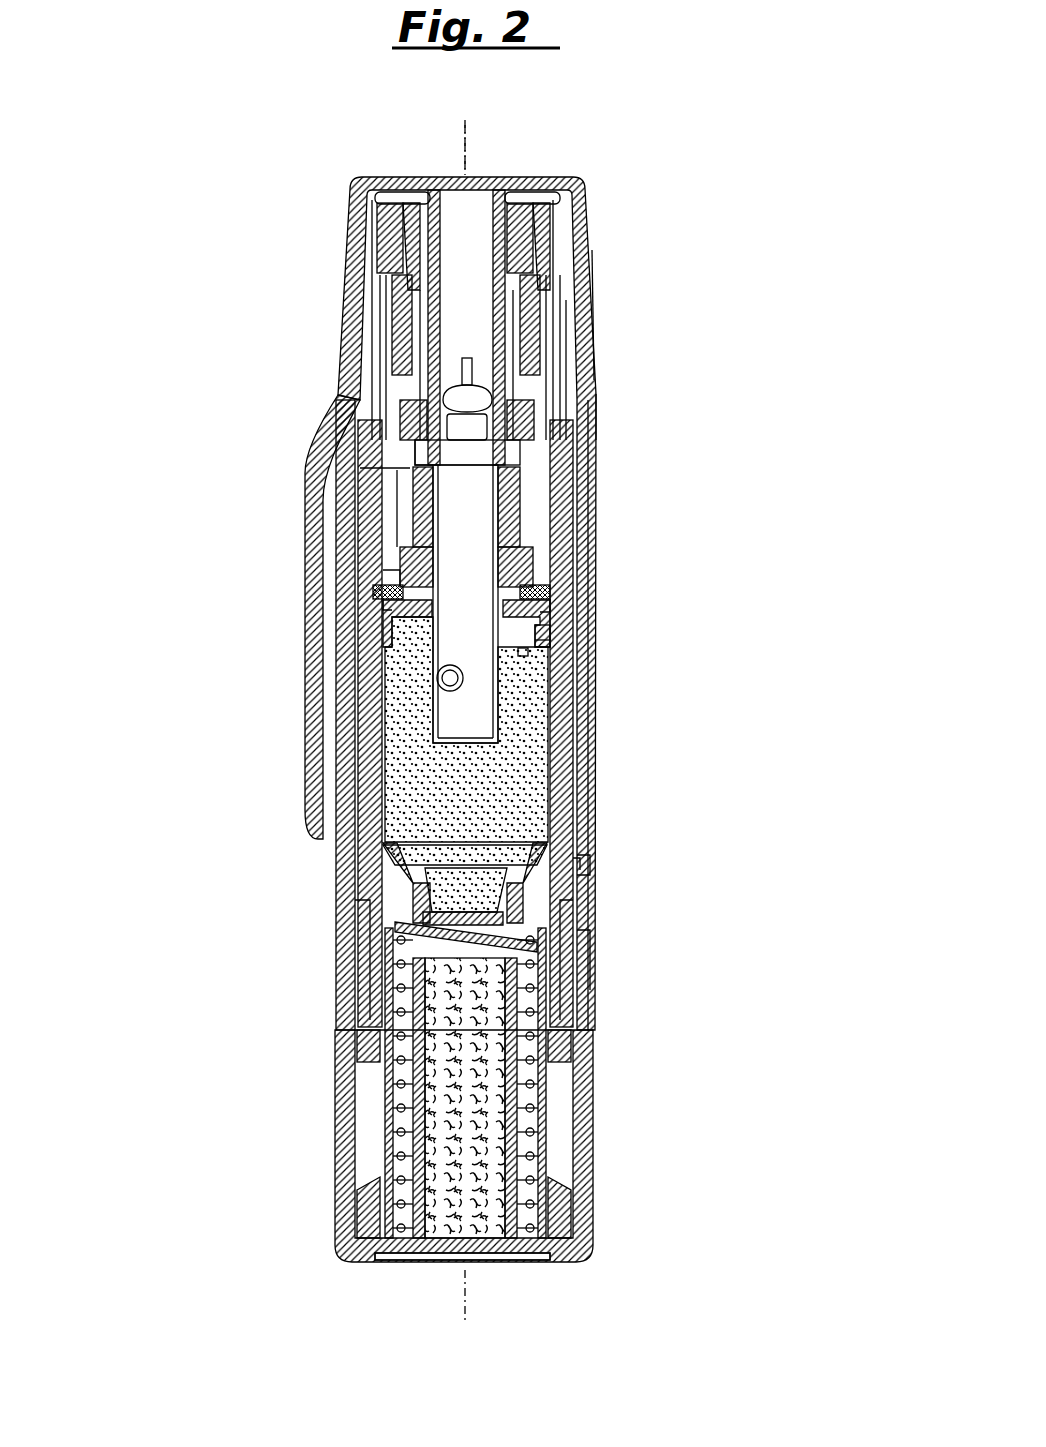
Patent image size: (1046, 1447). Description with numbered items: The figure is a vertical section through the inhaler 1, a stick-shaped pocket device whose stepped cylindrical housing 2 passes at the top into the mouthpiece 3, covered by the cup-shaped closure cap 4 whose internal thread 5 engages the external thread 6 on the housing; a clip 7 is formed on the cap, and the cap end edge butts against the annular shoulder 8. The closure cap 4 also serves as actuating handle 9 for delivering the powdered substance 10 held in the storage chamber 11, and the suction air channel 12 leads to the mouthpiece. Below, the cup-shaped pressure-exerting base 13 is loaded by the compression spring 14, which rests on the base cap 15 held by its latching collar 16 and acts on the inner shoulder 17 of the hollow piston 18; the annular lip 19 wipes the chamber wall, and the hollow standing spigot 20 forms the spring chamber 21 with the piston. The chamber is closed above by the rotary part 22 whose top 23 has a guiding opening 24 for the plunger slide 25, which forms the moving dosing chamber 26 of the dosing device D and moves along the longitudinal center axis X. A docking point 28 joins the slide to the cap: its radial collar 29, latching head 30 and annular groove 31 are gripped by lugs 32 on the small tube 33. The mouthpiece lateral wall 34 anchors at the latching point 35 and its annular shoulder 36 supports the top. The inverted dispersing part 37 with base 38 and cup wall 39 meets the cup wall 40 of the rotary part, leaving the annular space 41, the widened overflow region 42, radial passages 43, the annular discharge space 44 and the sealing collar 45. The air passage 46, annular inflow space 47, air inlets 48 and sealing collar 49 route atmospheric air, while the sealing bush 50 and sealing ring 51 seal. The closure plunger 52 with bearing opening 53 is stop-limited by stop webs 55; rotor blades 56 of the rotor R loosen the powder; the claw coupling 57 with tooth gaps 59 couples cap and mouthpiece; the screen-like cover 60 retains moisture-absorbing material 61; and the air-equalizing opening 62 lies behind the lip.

The inhaler 1 is at (358, 140).
The cylindrical housing 2 is at (562, 745).
The mouthpiece 3 is at (575, 200).
The closure cap 4 is at (520, 185).
The internal thread 5 is at (582, 860).
The external thread 6 is at (586, 955).
The clip 7 is at (342, 663).
The annular shoulder 8 is at (590, 1045).
The actuating handle 9 is at (343, 250).
The powdered substance 10 is at (412, 780).
The storage chamber 11 is at (560, 775).
The suction air channel 12 is at (562, 458).
The pressure-exerting base 13 is at (555, 866).
The compression spring 14 is at (556, 1150).
The base cap 15 is at (435, 1258).
The latching collar 16 is at (576, 1200).
The inner shoulder 17 is at (383, 897).
The hollow piston 18 is at (402, 1112).
The annular lip 19 is at (383, 855).
The standing spigot 20 is at (380, 1197).
The spring chamber 21 is at (405, 1147).
The rotary part 22 is at (383, 595).
The top 23 is at (548, 562).
The guiding opening 24 is at (556, 600).
The plunger slide 25 is at (448, 725).
The dosing chamber 26 is at (445, 700).
The docking point 28 is at (592, 312).
The radial collar 29 is at (562, 390).
The latching head 30 is at (423, 385).
The annular groove 31 is at (462, 427).
The lugs 32 is at (440, 443).
The small tube 33 is at (455, 215).
The lateral wall 34 is at (470, 383).
The latching point 35 is at (558, 625).
The annular shoulder 36 is at (503, 550).
The dispersing part 37 is at (400, 237).
The base 38 is at (583, 212).
The cup wall 39 is at (490, 370).
The cup wall 40 is at (400, 527).
The annular space 41 is at (387, 330).
The overflow region 42 is at (532, 450).
The radial passages 43 is at (405, 297).
The annular discharge space 44 is at (540, 215).
The sealing collar 45 is at (388, 300).
The air passage 46 is at (395, 575).
The annular inflow space 47 is at (397, 545).
The air inlets 48 is at (388, 502).
The sealing collar 49 is at (368, 493).
The sealing bush 50 is at (390, 598).
The sealing ring 51 is at (397, 620).
The closure plunger 52 is at (495, 500).
The bearing opening 53 is at (497, 538).
The stop webs 55 is at (412, 400).
The rotor blades 56 is at (437, 683).
The claw coupling 57 is at (598, 402).
The tooth gaps 59 is at (566, 357).
The screen-like cover 60 is at (400, 940).
The moisture-absorbing material 61 is at (520, 1137).
The air-equalizing opening 62 is at (566, 880).
The dosing device D is at (383, 468).
The rotor R is at (550, 640).
The longitudinal center axis X is at (464, 709).